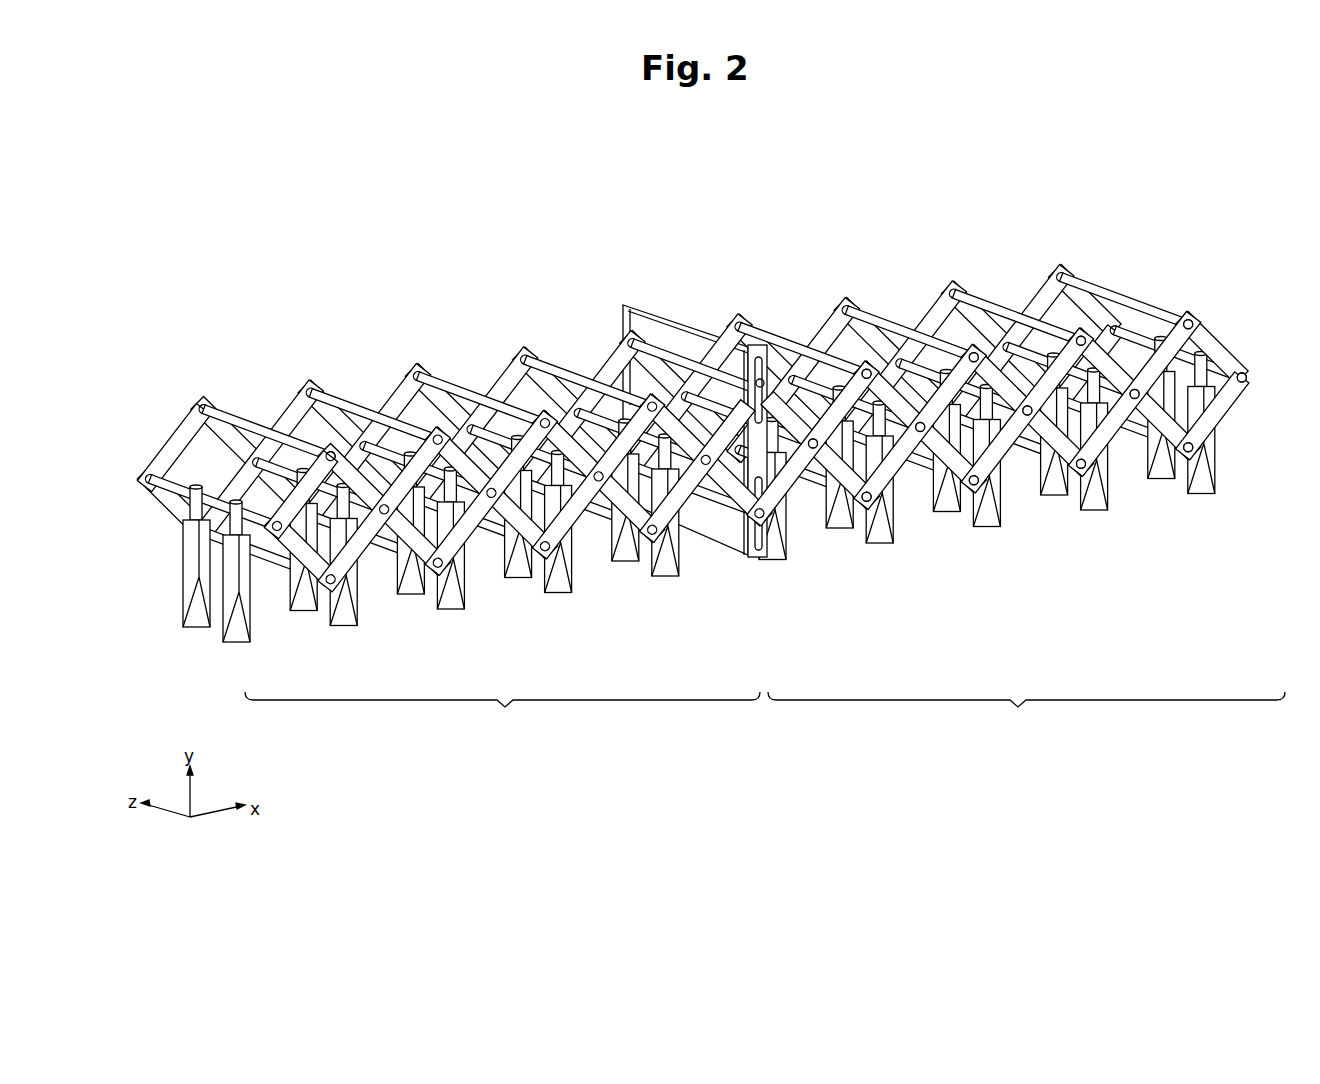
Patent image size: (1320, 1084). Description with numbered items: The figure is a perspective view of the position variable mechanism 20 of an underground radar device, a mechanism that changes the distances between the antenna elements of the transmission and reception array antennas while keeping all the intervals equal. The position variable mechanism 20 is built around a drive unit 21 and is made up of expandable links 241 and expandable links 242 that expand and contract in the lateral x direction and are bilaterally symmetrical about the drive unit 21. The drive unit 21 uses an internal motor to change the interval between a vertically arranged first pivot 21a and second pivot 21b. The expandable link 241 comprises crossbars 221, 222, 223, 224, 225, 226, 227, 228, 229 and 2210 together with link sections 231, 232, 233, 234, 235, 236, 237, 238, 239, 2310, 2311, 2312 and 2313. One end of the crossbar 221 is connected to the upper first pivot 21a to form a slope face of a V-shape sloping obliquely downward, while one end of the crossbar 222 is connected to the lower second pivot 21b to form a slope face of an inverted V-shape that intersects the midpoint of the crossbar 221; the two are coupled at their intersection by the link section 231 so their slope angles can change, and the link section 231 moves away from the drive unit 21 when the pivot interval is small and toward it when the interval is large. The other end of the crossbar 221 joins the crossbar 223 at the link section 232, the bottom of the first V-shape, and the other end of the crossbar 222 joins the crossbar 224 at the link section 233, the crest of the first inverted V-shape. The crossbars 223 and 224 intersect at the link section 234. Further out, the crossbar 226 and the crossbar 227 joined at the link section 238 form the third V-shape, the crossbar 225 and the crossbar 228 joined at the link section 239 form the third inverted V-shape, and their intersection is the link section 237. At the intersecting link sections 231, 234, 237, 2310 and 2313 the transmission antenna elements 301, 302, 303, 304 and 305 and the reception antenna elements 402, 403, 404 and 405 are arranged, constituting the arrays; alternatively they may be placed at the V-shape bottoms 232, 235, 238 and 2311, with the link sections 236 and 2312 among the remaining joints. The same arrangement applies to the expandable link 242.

The position variable mechanism 20 is at (711, 411).
The drive unit 21 is at (646, 306).
The first pivot 21a is at (762, 400).
The second pivot 21b is at (753, 556).
The crossbar 221 is at (797, 385).
The crossbar 222 is at (797, 520).
The crossbar 223 is at (905, 385).
The crossbar 224 is at (905, 500).
The crossbar 225 is at (1010, 485).
The crossbar 226 is at (1015, 365).
The crossbar 227 is at (1118, 470).
The crossbar 228 is at (1120, 350).
The crossbar 229 is at (1222, 345).
The crossbar 2210 is at (1232, 450).
The link section 231 is at (815, 450).
The link section 232 is at (863, 503).
The link section 233 is at (876, 372).
The link section 234 is at (921, 435).
The link section 235 is at (972, 487).
The link section 236 is at (982, 355).
The link section 237 is at (1028, 418).
The link section 238 is at (1080, 470).
The link section 239 is at (1090, 338).
The link section 2310 is at (1135, 402).
The link section 2311 is at (1189, 455).
The link section 2312 is at (1195, 322).
The link section 2313 is at (1245, 385).
The expandable link 241 is at (1026, 715).
The expandable link 242 is at (502, 715).
The transmission antenna element 301 is at (772, 548).
The transmission antenna element 302 is at (880, 545).
The transmission antenna element 303 is at (987, 540).
The transmission antenna element 304 is at (1094, 520).
The transmission antenna element 305 is at (1201, 505).
The reception antenna element 402 is at (840, 420).
The reception antenna element 403 is at (946, 415).
The reception antenna element 404 is at (1053, 400).
The reception antenna element 405 is at (1160, 385).